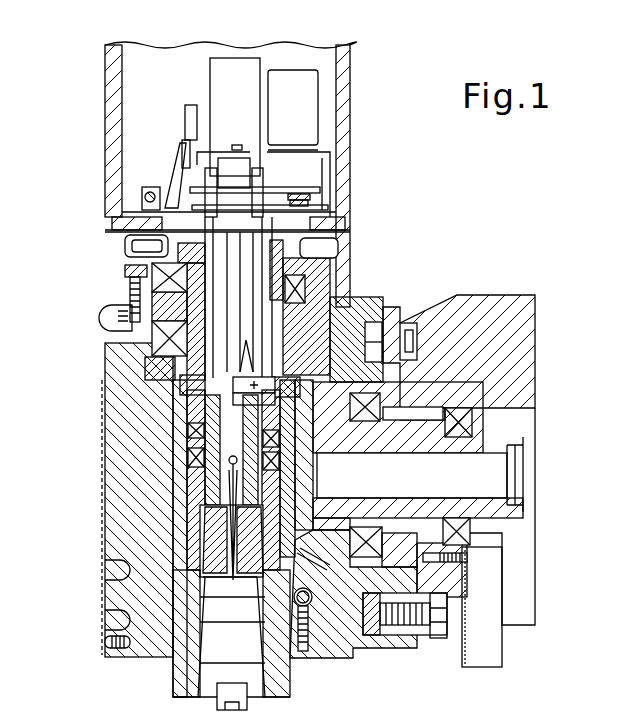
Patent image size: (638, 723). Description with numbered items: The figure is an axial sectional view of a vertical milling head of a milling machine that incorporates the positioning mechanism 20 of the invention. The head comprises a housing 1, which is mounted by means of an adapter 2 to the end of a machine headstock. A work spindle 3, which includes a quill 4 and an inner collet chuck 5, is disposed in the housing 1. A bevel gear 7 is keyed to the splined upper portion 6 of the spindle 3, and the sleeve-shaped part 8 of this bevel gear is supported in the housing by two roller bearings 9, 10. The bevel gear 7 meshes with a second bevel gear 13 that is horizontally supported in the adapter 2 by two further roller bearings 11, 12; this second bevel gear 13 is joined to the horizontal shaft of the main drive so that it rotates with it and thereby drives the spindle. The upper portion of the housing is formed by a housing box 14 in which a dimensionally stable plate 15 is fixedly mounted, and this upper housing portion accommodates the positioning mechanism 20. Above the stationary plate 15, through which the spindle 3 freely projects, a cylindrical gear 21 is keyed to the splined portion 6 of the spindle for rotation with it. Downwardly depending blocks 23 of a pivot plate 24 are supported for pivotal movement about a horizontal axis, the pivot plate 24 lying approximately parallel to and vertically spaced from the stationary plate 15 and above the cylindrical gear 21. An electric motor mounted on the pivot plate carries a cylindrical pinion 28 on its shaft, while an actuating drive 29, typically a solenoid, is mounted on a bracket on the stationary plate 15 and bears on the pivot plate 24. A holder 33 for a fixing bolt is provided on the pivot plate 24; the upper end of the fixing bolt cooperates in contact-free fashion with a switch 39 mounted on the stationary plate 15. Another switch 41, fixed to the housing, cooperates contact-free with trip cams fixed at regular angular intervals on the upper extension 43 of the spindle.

The housing 1 is at (122, 450).
The adapter 2 is at (430, 306).
The work spindle 3 is at (172, 682).
The quill 4 is at (173, 594).
The inner collet chuck 5 is at (222, 523).
The splined upper portion 6 is at (317, 318).
The bevel gear 7 is at (168, 396).
The sleeve-shaped part 8 is at (272, 278).
The roller bearing 9 is at (150, 282).
The roller bearing 10 is at (138, 326).
The roller bearing 11 is at (470, 538).
The roller bearing 12 is at (362, 552).
The second bevel gear 13 is at (342, 572).
The housing box 14 is at (105, 128).
The dimensionally stable plate 15 is at (112, 224).
The positioning mechanism 20 is at (323, 138).
The cylindrical gear 21 is at (186, 184).
The downwardly depending blocks 23 is at (140, 193).
The pivot plate 24 is at (322, 184).
The cylindrical pinion 28 is at (308, 202).
The actuating drive 29 is at (312, 83).
The holder 33 is at (248, 160).
The switch 39 is at (186, 148).
The switch 41 is at (190, 106).
The upper extension 43 is at (210, 68).